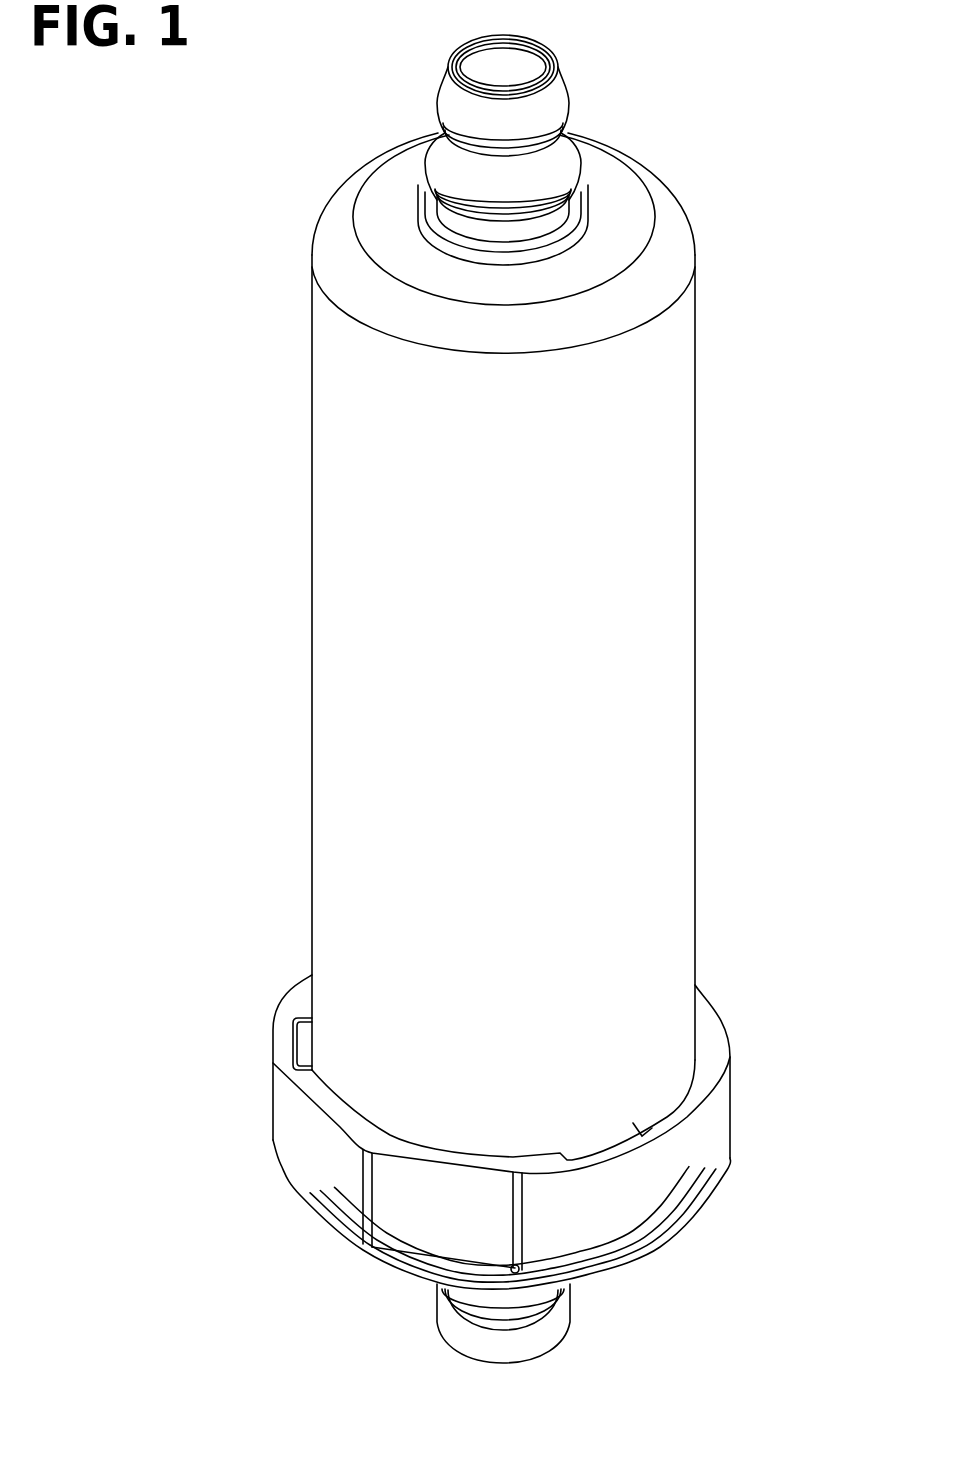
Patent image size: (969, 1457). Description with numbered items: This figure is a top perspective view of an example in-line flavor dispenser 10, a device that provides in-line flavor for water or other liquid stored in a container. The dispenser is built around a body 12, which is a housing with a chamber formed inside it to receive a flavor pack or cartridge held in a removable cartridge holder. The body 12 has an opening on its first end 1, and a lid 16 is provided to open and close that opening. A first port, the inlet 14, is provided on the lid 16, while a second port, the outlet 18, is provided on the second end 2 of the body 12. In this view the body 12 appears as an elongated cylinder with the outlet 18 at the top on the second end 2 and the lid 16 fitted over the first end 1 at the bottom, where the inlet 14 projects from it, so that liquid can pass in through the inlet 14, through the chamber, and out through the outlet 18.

The in-line flavor dispenser 10 is at (790, 138).
The body 12 is at (697, 610).
The second end 2 is at (620, 160).
The outlet 18 is at (552, 63).
The lid 16 is at (730, 1057).
The first end 1 is at (440, 1150).
The inlet 14 is at (565, 1335).